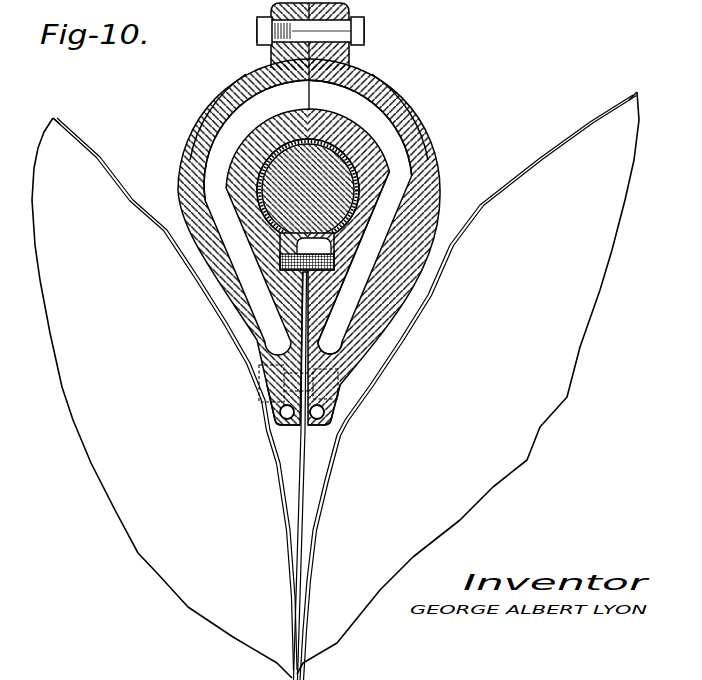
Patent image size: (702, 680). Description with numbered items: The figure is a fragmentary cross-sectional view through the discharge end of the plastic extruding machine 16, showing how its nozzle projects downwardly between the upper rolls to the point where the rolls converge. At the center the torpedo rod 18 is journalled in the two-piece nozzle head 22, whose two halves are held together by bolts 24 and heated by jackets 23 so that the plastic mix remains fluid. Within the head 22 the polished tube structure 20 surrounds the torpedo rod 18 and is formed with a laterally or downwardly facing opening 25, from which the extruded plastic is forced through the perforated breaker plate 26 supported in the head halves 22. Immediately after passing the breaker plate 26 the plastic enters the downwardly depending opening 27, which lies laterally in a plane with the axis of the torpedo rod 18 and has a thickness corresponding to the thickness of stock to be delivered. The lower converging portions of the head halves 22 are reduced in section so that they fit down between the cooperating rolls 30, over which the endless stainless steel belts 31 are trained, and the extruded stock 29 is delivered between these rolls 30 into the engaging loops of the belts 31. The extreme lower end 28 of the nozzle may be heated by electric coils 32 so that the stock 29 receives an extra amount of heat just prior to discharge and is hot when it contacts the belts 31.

The plastic extruding machine 16 is at (421, 105).
The torpedo rod 18 is at (327, 197).
The polished tube structure 20 is at (357, 153).
The two-piece nozzle head 22 is at (248, 88).
The jackets 23 is at (230, 138).
The bolts 24 is at (358, 35).
The downwardly facing opening 25 is at (340, 243).
The breaker plate 26 is at (322, 268).
The downwardly depending opening 27 is at (333, 322).
The extreme lower end of the nozzle 28 is at (332, 426).
The extruded stock 29 is at (307, 477).
The cooperating rolls 30 is at (72, 175).
The endless stainless steel belts 31 is at (60, 119).
The electric coils 32 is at (280, 412).